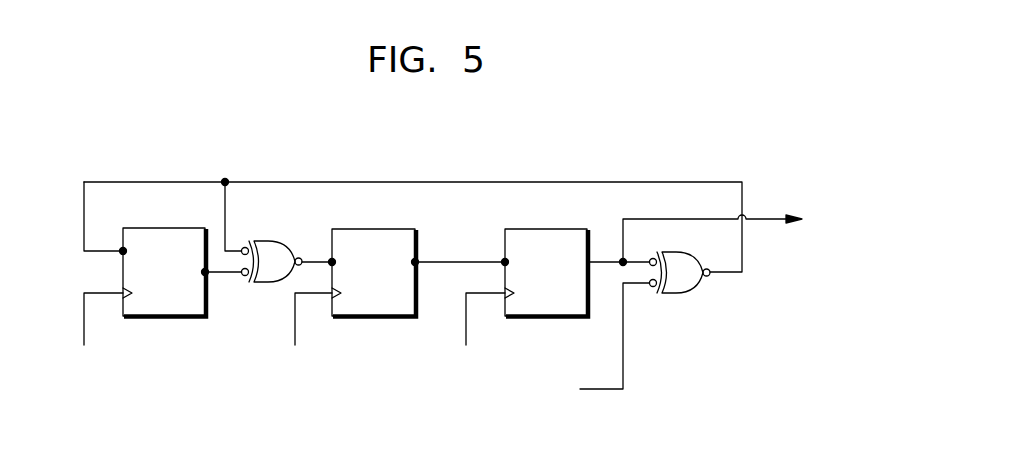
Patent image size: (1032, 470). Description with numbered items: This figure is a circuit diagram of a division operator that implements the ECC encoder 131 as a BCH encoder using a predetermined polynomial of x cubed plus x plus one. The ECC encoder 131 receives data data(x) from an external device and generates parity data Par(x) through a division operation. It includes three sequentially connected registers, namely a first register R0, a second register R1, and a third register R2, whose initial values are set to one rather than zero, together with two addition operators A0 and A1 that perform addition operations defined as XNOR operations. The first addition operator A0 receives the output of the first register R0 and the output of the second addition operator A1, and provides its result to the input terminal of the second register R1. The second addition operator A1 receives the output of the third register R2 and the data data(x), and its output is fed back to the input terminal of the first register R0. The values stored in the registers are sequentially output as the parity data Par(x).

The ECC encoder 131 is at (738, 148).
The first register R0 is at (166, 318).
The second register R1 is at (376, 318).
The third register R2 is at (553, 318).
The first addition operator A0 is at (262, 283).
The second addition operator A1 is at (677, 294).